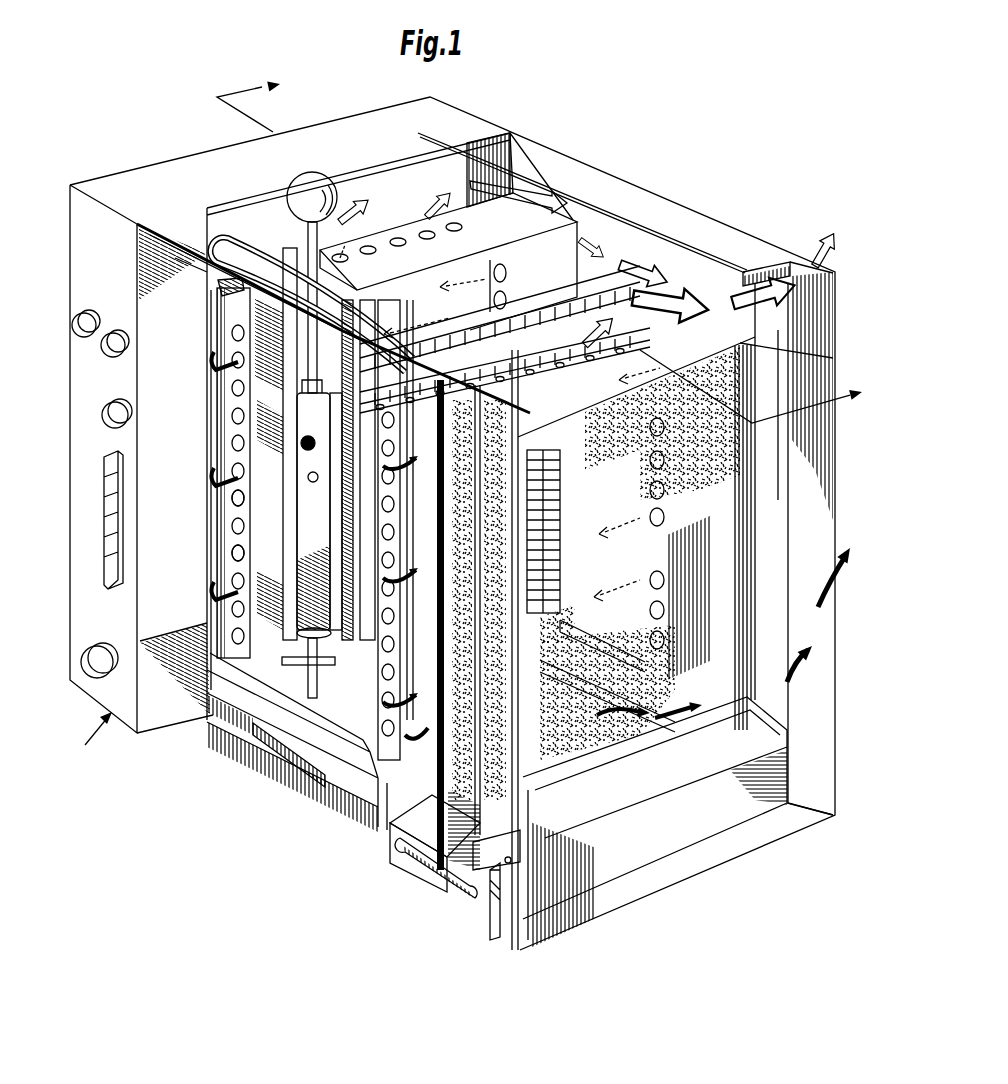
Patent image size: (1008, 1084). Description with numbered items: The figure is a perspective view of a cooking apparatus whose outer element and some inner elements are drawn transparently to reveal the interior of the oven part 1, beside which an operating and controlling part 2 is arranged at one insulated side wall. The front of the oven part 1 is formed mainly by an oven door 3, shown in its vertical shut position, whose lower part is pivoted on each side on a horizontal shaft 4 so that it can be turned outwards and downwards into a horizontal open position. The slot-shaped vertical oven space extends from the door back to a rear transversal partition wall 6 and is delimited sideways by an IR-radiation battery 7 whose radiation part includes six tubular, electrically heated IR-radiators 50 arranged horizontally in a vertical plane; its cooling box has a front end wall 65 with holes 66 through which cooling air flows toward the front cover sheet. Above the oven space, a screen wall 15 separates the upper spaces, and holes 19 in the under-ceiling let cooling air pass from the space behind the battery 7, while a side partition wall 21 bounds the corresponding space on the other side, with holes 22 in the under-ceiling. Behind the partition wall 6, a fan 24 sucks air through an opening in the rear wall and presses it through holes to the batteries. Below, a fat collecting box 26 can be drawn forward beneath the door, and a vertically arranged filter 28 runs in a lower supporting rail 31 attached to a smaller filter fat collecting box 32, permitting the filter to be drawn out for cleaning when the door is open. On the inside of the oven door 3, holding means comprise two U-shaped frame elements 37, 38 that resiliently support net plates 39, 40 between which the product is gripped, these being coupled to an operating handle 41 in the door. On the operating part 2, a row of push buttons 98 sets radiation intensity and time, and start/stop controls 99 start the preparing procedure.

The oven part 1 is at (678, 193).
The operating and controlling part 2 is at (475, 416).
The oven door 3 is at (182, 224).
The horizontal shaft 4 is at (485, 907).
The rear transversal partition wall 6 is at (690, 243).
The IR-radiation battery 7 is at (255, 392).
The screen wall 15 is at (567, 213).
The holes 19 is at (400, 240).
The side partition wall 21 is at (700, 323).
The holes 22 is at (620, 333).
The fan 24 is at (577, 500).
The fat collecting box 26 is at (267, 763).
The filter 28 is at (440, 785).
The lower supporting rail 31 is at (580, 777).
The filter fat collecting box 32 is at (437, 887).
The U-shaped frame element 37 is at (482, 318).
The U-shaped frame element 38 is at (570, 620).
The net plate 39 is at (523, 323).
The net plate 40 is at (557, 575).
The operating handle 41 is at (318, 172).
The IR-radiators 50 is at (345, 400).
The front end wall 65 is at (240, 550).
The holes 66 is at (236, 508).
The push buttons 98 is at (108, 458).
The start/stop controls 99 is at (112, 330).